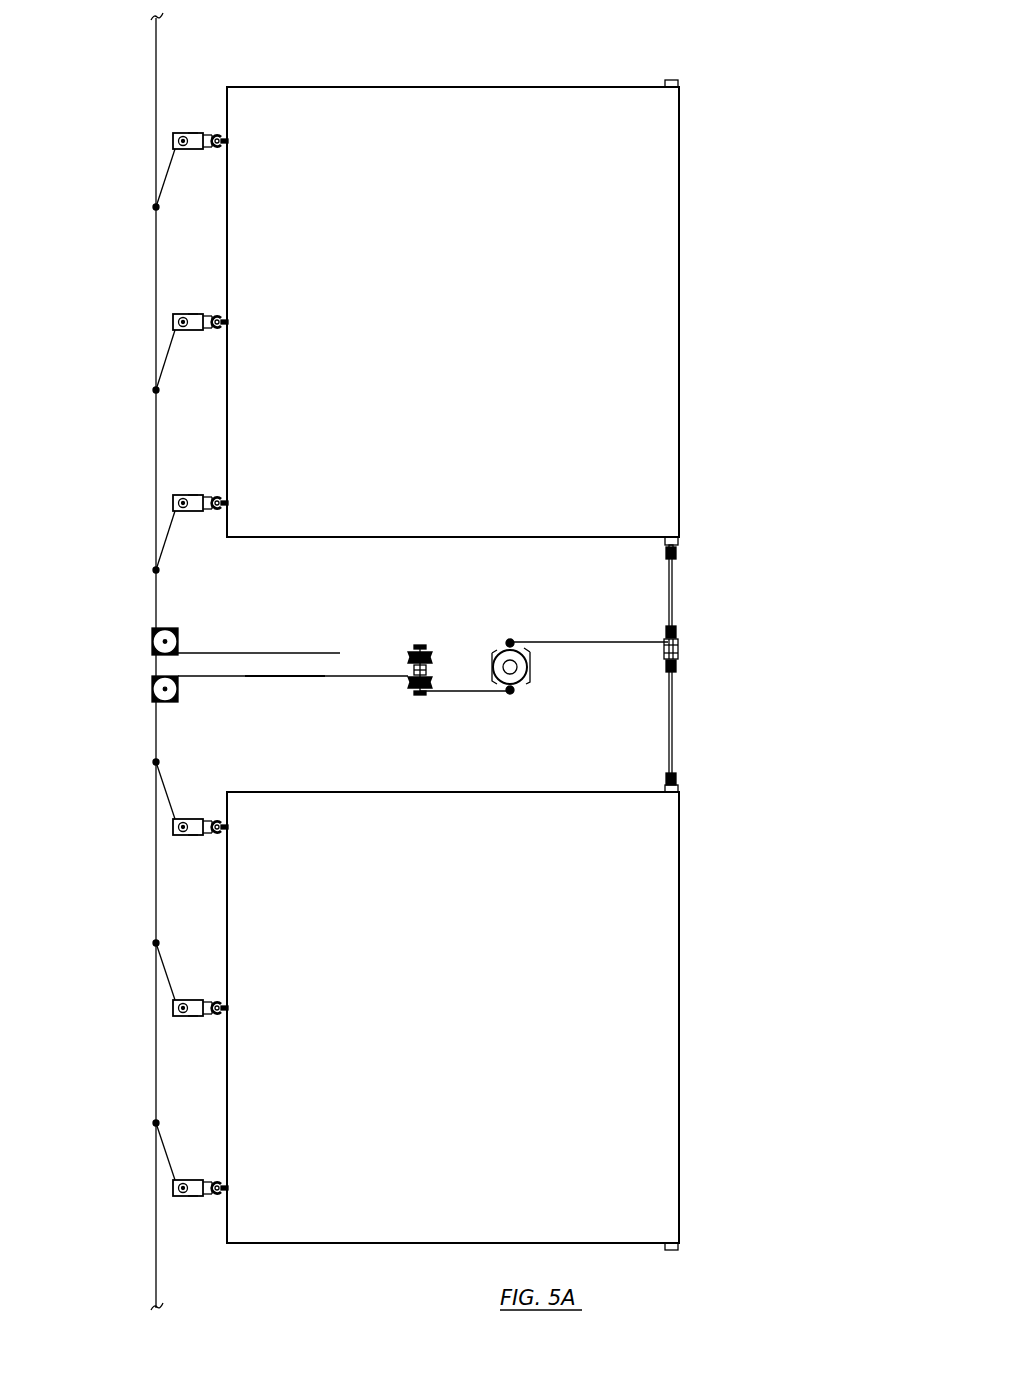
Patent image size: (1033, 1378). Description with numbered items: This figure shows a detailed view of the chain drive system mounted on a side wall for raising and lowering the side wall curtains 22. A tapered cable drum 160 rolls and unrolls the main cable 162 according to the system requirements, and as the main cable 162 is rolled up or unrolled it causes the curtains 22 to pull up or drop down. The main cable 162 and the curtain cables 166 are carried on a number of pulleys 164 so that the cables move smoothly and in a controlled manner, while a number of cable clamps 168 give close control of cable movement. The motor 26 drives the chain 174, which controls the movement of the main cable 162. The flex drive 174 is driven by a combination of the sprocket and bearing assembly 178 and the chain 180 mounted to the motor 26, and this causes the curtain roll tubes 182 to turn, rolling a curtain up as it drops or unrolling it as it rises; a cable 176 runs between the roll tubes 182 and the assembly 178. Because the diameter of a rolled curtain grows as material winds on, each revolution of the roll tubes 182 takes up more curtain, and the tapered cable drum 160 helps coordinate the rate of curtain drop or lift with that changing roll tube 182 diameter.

The curtains 22 is at (610, 382).
The motor 26 is at (527, 679).
The tapered cable drum 160 is at (408, 653).
The main cable 162 is at (156, 45).
The pulleys 164 is at (175, 137).
The curtain cables 166 is at (193, 133).
The cable clamps 168 is at (156, 207).
The chain 174 is at (455, 694).
The cable 176 is at (675, 580).
The sprocket and bearing assembly 178 is at (679, 648).
The chain 180 is at (588, 641).
The curtain roll tubes 182 is at (679, 84).